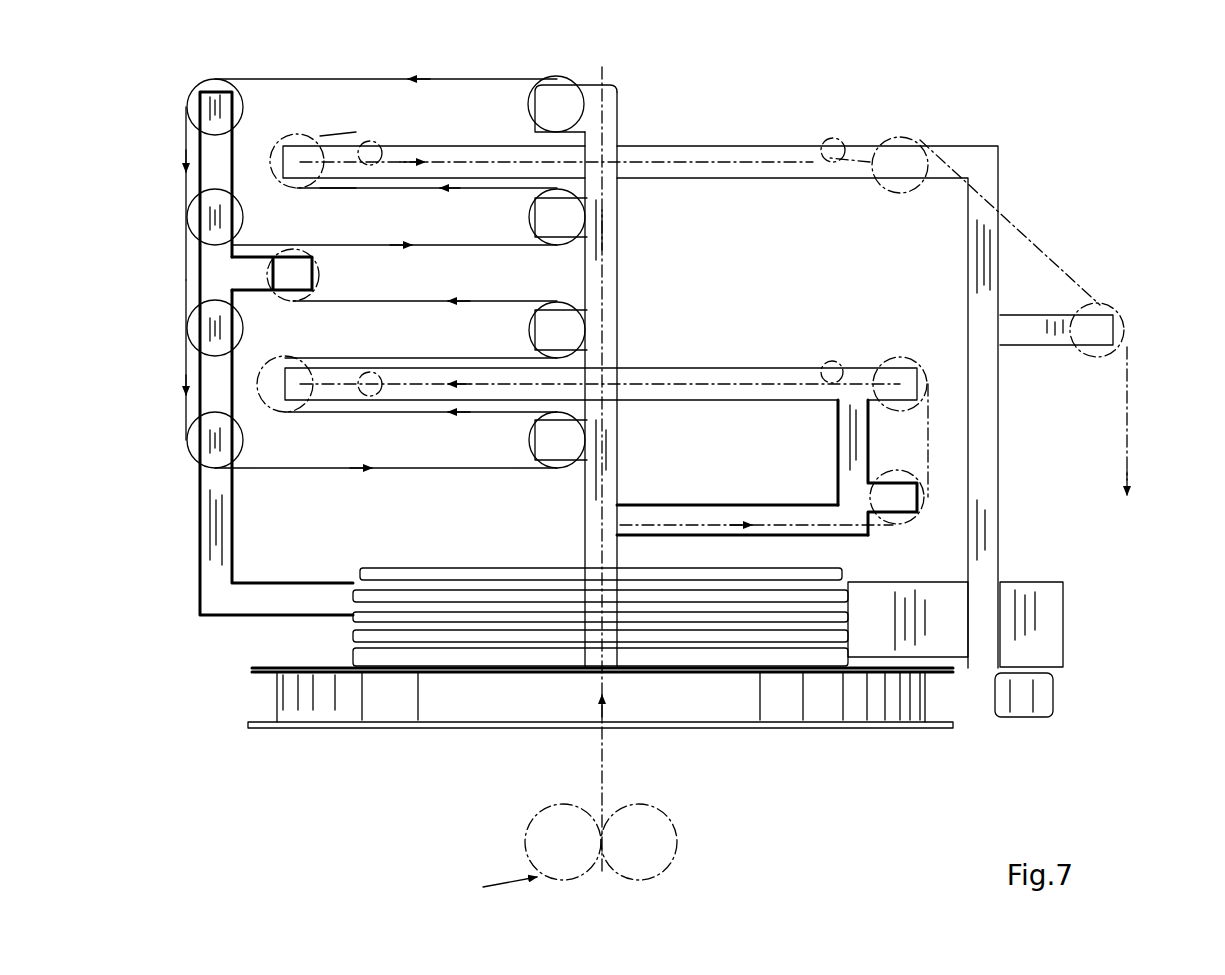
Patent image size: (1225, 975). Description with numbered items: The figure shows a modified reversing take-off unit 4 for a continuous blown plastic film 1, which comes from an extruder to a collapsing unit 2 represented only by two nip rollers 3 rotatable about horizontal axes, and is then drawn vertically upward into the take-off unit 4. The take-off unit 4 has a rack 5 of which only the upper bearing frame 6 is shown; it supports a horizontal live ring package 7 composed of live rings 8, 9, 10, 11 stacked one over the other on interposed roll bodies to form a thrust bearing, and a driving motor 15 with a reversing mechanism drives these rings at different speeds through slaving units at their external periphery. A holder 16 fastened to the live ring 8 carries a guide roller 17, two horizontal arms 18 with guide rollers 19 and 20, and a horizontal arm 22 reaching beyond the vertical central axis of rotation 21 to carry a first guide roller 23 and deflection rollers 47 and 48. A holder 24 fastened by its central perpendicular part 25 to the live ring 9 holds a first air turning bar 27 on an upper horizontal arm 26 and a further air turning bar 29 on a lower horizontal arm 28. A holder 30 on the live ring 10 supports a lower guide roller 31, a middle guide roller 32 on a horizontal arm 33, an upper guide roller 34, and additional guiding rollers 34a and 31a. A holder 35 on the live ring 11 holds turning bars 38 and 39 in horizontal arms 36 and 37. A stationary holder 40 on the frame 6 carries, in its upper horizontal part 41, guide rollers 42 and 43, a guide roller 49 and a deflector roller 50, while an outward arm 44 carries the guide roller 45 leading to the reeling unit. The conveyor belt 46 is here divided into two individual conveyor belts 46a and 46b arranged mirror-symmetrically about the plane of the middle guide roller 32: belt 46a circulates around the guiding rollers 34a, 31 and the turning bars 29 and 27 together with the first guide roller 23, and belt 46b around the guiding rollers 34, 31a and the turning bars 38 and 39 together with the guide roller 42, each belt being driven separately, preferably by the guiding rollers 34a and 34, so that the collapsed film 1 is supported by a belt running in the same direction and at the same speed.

The continuous blown plastic film 1 is at (1045, 245).
The collapsing unit 2 is at (500, 888).
The nip rollers 3 is at (525, 837).
The reversing take-off unit 4 is at (690, 142).
The rack 5 is at (806, 730).
The upper bearing frame 6 is at (355, 735).
The live ring package 7 is at (348, 656).
The live ring 8 is at (440, 666).
The live ring 9 is at (460, 590).
The live ring 10 is at (372, 568).
The live ring 11 is at (485, 642).
The driving motor 15 is at (1040, 622).
The holder 16 is at (778, 500).
The guide roller 17 is at (625, 528).
The horizontal arms 18 is at (890, 372).
The guide roller 19 is at (923, 502).
The guide roller 20 is at (925, 378).
The vertical central axis of rotation 21 is at (600, 287).
The horizontal arm 22 is at (377, 380).
The first guide roller 23 is at (290, 405).
The holder 24 is at (614, 335).
The central perpendicular part 25 is at (612, 437).
The upper horizontal arm 26 is at (548, 312).
The first air turning bar 27 is at (538, 330).
The horizontal arm 28 is at (553, 455).
The further air turning bar 29 is at (538, 441).
The holder 30 is at (215, 503).
The lower guide roller 31 is at (195, 448).
The guiding roller 31a is at (195, 216).
The middle guide roller 32 is at (297, 298).
The horizontal arm 33 is at (250, 268).
The upper guide roller 34 is at (203, 82).
The guiding roller 34a is at (195, 328).
The holder 35 is at (614, 222).
The horizontal arm 36 is at (548, 237).
The horizontal arm 37 is at (610, 122).
The turning bar 38 is at (538, 220).
The turning bar 39 is at (540, 95).
The holder 40 is at (988, 450).
The upper horizontal part 41 is at (752, 147).
The guide roller 42 is at (275, 138).
The guide roller 43 is at (902, 140).
The horizontal arm 44 is at (1033, 325).
The guide roller 45 is at (1105, 352).
The conveyor belt 46 is at (302, 472).
The lower individual conveyor belt 46a is at (186, 408).
The upper individual conveyor belt 46b is at (185, 138).
The deflection roller 47 is at (828, 360).
The deflection roller 48 is at (370, 393).
The guide roller 49 is at (375, 147).
The deflector roller 50 is at (833, 138).